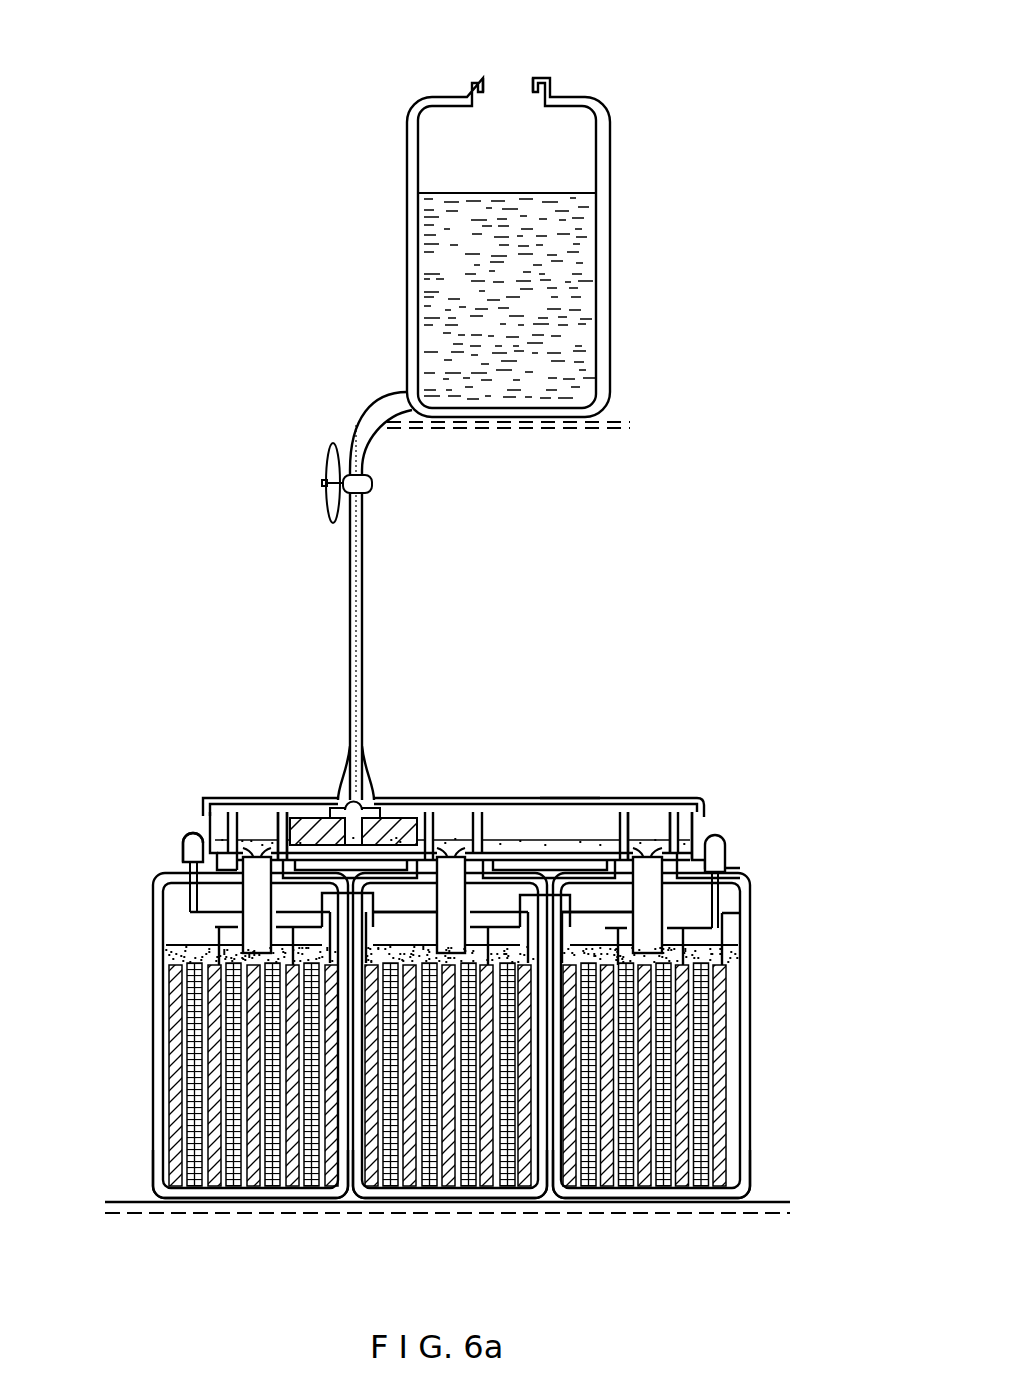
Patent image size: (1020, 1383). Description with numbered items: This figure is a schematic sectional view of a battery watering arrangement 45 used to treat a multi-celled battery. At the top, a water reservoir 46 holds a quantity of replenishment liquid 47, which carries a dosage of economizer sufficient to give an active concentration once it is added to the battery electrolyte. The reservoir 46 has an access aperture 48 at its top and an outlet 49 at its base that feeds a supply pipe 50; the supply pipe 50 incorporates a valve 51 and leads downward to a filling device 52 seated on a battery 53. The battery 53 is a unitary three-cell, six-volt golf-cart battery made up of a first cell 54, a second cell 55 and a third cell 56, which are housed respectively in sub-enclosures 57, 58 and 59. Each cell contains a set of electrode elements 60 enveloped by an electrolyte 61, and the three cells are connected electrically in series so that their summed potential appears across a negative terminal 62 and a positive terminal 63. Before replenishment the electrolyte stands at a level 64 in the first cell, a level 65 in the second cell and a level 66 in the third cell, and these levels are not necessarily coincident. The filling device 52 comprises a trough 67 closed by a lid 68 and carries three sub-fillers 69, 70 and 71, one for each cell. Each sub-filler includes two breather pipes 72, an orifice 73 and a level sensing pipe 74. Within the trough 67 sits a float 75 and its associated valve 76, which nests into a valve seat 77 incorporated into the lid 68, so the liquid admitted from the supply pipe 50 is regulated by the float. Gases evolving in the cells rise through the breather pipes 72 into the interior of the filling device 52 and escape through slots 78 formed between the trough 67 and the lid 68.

The battery watering arrangement 45 is at (698, 225).
The water reservoir 46 is at (612, 150).
The replenishment liquid 47 is at (578, 365).
The access aperture 48 is at (513, 90).
The outlet 49 is at (407, 394).
The supply pipe 50 is at (365, 458).
The valve 51 is at (375, 490).
The filling device 52 is at (699, 791).
The battery 53 is at (764, 869).
The first cell 54 is at (172, 885).
The second cell 55 is at (495, 900).
The third cell 56 is at (722, 905).
The sub-enclosure 57 is at (252, 1200).
The sub-enclosure 58 is at (457, 1204).
The sub-enclosure 59 is at (650, 1204).
The electrode elements 60 is at (730, 1023).
The electrolyte 61 is at (740, 963).
The negative terminal 62 is at (183, 842).
The positive terminal 63 is at (726, 843).
The electrolyte level 64 is at (193, 946).
The electrolyte level 65 is at (400, 945).
The electrolyte level 66 is at (585, 950).
The trough 67 is at (693, 830).
The lid 68 is at (557, 797).
The sub-filler 69 is at (258, 818).
The sub-filler 70 is at (453, 826).
The sub-filler 71 is at (645, 823).
The breather pipes 72 is at (287, 808).
The orifice 73 is at (237, 870).
The level sensing pipe 74 is at (215, 912).
The float 75 is at (362, 802).
The valve 76 is at (338, 798).
The valve seat 77 is at (372, 796).
The slots 78 is at (186, 833).